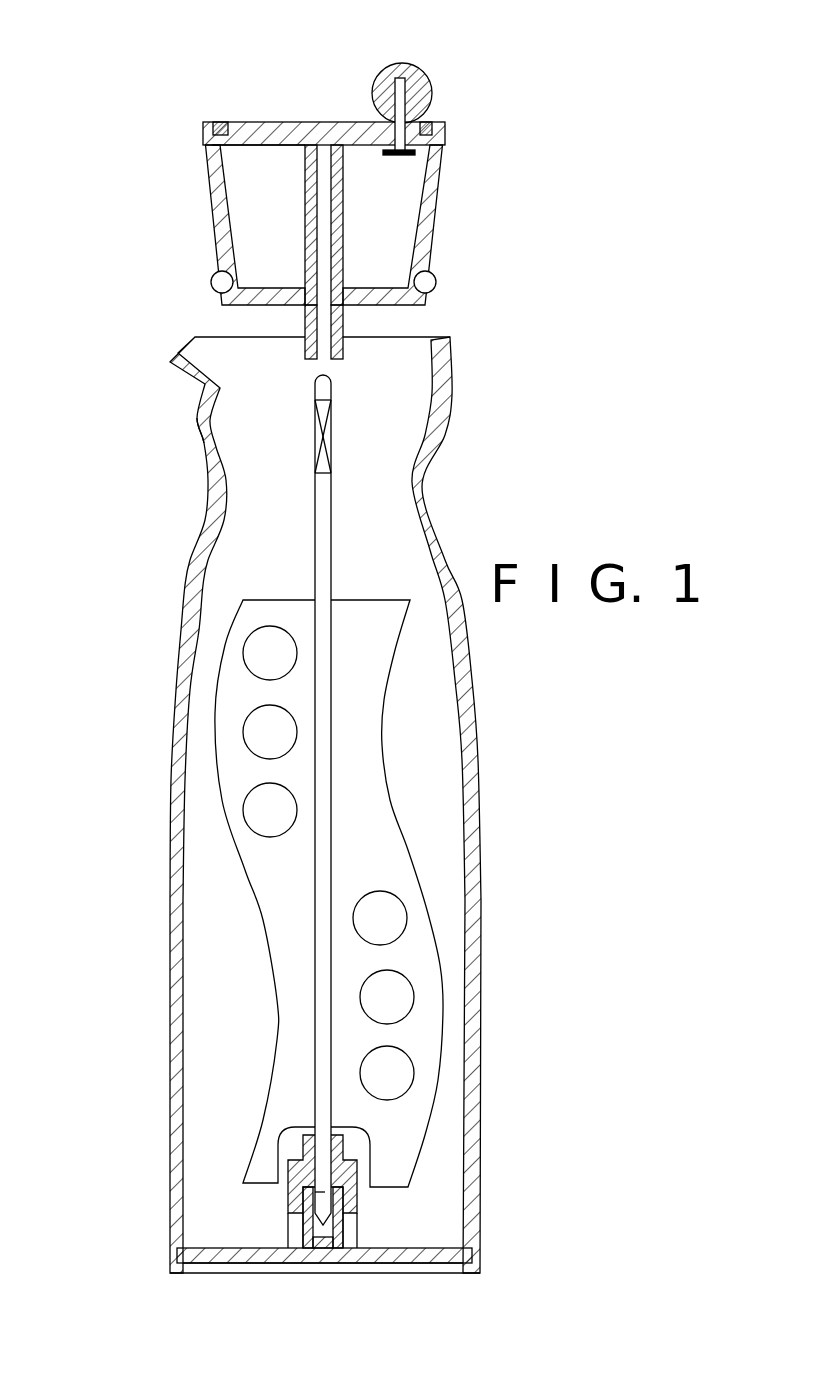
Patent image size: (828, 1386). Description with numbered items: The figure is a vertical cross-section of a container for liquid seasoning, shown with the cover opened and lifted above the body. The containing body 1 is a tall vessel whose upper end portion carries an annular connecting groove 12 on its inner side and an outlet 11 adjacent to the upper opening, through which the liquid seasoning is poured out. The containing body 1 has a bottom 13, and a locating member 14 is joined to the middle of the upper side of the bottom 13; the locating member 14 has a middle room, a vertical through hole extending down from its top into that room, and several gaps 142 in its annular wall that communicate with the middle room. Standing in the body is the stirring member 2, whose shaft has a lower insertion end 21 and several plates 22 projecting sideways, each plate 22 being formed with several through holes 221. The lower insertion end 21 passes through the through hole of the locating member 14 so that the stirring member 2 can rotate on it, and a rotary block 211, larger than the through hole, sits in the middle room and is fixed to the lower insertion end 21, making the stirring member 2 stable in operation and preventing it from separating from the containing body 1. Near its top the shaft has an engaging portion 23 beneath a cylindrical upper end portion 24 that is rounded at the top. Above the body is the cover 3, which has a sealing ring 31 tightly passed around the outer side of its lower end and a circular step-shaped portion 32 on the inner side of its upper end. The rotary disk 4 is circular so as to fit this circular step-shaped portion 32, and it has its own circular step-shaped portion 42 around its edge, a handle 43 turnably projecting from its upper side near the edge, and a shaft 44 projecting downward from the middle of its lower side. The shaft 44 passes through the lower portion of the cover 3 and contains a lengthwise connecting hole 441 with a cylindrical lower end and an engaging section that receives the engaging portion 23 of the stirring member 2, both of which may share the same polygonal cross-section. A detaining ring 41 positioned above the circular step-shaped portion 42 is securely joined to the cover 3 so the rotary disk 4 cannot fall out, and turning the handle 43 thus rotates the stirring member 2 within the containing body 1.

The containing body 1 is at (177, 690).
The outlet 11 is at (217, 350).
The annular connecting groove 12 is at (226, 436).
The bottom 13 is at (432, 1262).
The locating member 14 is at (286, 1196).
The gaps 142 is at (297, 1230).
The stirring member 2 is at (333, 568).
The lower insertion end 21 is at (318, 1248).
The rotary block 211 is at (324, 1244).
The plates 22 is at (363, 740).
The through holes 221 is at (388, 918).
The engaging portion 23 is at (330, 437).
The cylindrical upper end portion 24 is at (322, 390).
The cover 3 is at (212, 190).
The sealing ring 31 is at (212, 278).
The circular step-shaped portion 32 is at (436, 165).
The rotary disk 4 is at (319, 125).
The detaining ring 41 is at (216, 122).
The circular step-shaped portion 42 is at (232, 140).
The handle 43 is at (428, 80).
The shaft 44 is at (338, 218).
The connecting hole 441 is at (324, 312).